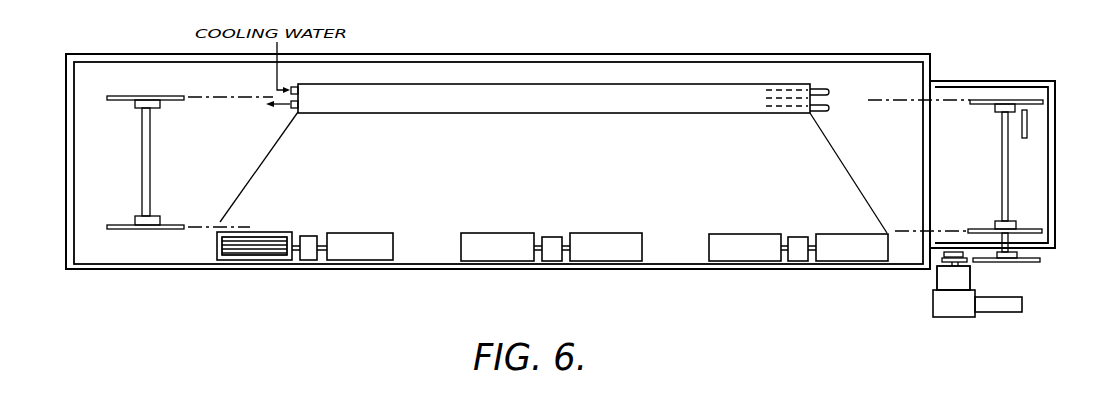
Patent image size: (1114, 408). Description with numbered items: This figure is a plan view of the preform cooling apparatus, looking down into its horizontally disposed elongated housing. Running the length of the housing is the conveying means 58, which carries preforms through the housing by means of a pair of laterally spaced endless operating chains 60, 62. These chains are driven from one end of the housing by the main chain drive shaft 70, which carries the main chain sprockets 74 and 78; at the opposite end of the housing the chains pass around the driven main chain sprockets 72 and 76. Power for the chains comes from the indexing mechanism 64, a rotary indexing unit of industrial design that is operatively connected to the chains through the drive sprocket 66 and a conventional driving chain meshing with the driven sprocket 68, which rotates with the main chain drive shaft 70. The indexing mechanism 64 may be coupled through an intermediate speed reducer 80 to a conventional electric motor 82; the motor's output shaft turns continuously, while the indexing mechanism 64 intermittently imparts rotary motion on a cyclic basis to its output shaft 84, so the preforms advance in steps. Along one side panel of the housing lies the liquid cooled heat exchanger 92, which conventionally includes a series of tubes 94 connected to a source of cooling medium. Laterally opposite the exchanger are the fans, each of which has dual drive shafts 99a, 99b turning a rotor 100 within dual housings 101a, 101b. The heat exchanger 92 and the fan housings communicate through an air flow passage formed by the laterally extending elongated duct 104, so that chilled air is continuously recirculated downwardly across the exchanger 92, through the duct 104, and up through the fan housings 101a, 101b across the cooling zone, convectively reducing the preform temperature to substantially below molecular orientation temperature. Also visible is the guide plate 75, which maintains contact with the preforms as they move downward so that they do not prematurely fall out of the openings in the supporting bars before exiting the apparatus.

The conveying means 58 is at (885, 327).
The operating chain 60 is at (249, 95).
The operating chain 62 is at (195, 225).
The indexing mechanism 64 is at (943, 278).
The drive sprocket 66 is at (939, 259).
The driven sprocket 68 is at (1037, 261).
The main chain drive shaft 70 is at (1003, 160).
The driven main chain sprocket 72 is at (136, 234).
The main chain sprocket 74 is at (1030, 226).
The guide plate 75 is at (1030, 130).
The driven main chain sprocket 76 is at (176, 94).
The main chain sprocket 78 is at (982, 99).
The intermediate speed reducer 80 is at (948, 318).
The electric motor 82 is at (1008, 312).
The output shaft 84 is at (958, 264).
The liquid cooled heat exchanger 92 is at (555, 95).
The tubes 94 is at (790, 90).
The drive shaft 99a is at (297, 258).
The drive shaft 99b is at (322, 256).
The rotor 100 is at (262, 250).
The fan housing 101a is at (267, 234).
The fan housing 101b is at (358, 232).
The duct 104 is at (387, 125).